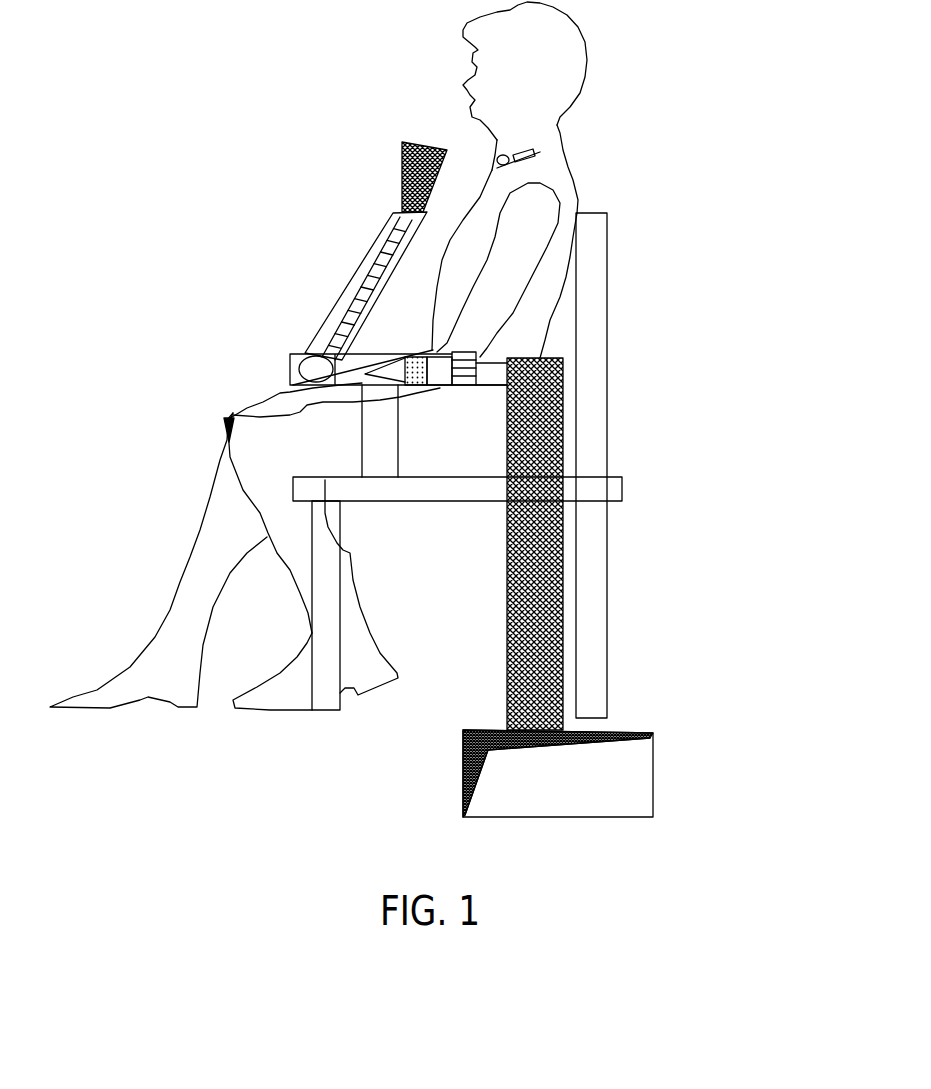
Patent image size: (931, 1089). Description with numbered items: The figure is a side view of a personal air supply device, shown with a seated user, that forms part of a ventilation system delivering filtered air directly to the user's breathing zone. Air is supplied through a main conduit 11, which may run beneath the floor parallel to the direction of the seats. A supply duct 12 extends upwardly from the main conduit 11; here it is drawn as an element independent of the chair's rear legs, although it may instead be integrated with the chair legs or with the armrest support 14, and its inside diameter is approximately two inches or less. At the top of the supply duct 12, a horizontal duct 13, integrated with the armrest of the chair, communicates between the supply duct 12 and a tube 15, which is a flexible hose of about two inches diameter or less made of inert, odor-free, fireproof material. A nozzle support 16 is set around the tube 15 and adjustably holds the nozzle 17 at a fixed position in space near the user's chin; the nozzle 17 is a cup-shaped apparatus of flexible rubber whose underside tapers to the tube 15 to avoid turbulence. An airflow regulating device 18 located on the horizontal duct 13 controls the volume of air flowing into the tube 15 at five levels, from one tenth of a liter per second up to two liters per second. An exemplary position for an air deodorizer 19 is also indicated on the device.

The main conduit 11 is at (620, 767).
The supply duct 12 is at (550, 607).
The horizontal duct 13 is at (365, 374).
The armrest support 14 is at (384, 450).
The tube 15 is at (352, 313).
The nozzle support 16 is at (397, 267).
The nozzle 17 is at (422, 178).
The airflow regulating device 18 is at (470, 372).
The air deodorizer 19 is at (510, 389).